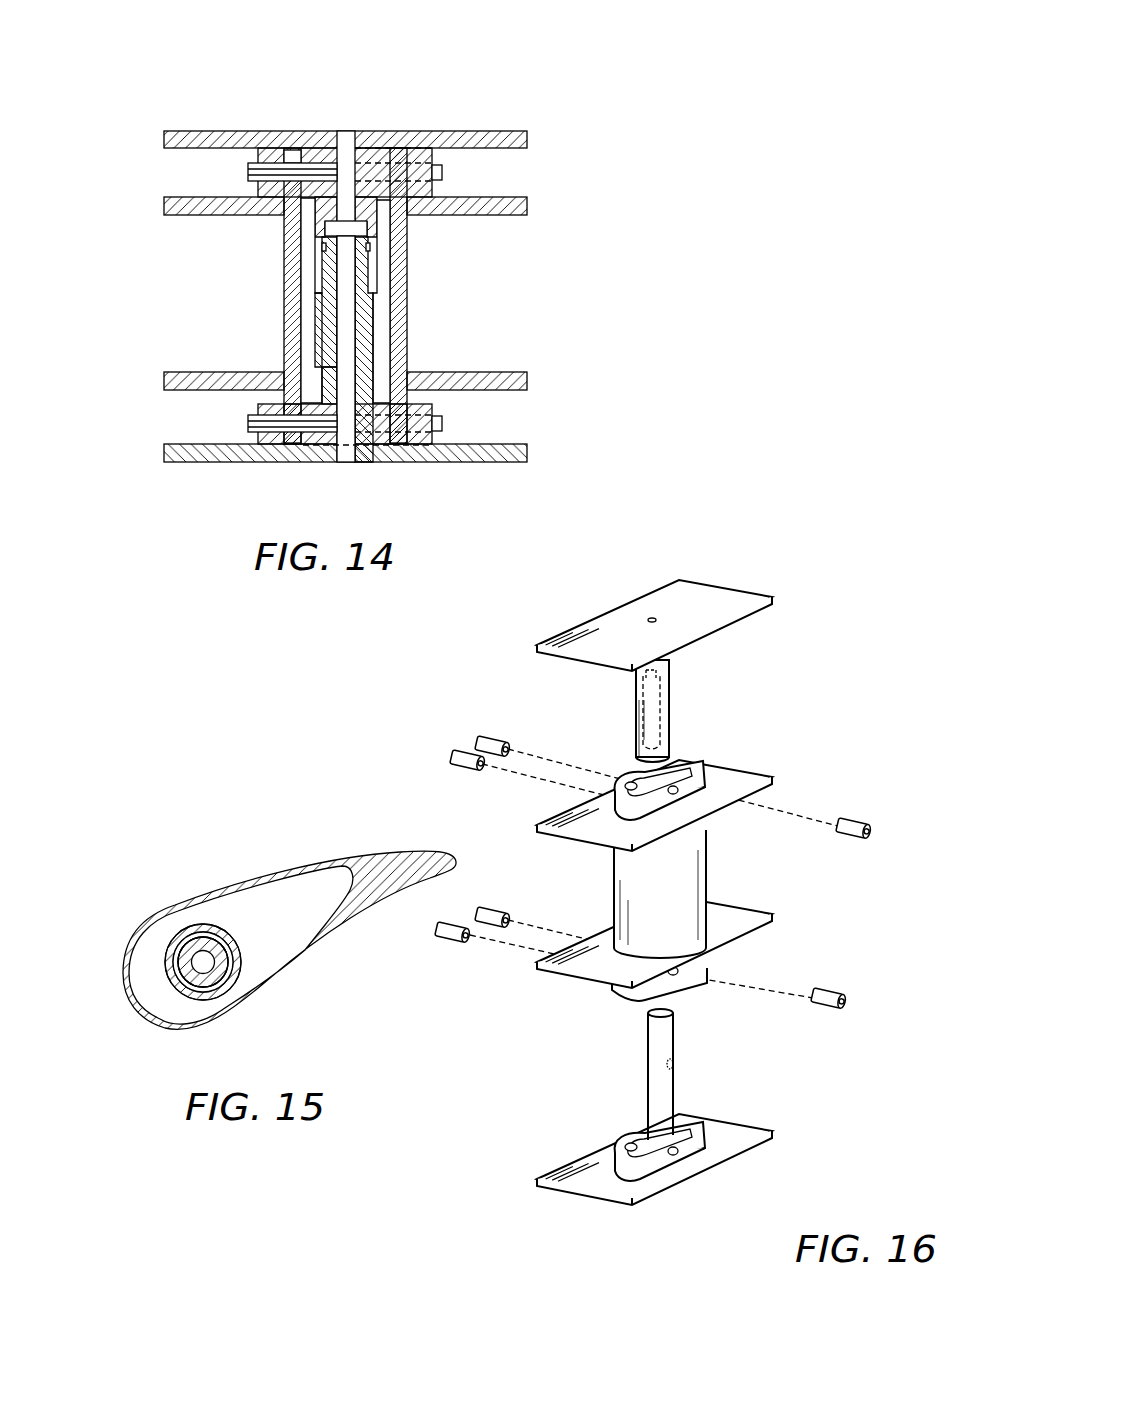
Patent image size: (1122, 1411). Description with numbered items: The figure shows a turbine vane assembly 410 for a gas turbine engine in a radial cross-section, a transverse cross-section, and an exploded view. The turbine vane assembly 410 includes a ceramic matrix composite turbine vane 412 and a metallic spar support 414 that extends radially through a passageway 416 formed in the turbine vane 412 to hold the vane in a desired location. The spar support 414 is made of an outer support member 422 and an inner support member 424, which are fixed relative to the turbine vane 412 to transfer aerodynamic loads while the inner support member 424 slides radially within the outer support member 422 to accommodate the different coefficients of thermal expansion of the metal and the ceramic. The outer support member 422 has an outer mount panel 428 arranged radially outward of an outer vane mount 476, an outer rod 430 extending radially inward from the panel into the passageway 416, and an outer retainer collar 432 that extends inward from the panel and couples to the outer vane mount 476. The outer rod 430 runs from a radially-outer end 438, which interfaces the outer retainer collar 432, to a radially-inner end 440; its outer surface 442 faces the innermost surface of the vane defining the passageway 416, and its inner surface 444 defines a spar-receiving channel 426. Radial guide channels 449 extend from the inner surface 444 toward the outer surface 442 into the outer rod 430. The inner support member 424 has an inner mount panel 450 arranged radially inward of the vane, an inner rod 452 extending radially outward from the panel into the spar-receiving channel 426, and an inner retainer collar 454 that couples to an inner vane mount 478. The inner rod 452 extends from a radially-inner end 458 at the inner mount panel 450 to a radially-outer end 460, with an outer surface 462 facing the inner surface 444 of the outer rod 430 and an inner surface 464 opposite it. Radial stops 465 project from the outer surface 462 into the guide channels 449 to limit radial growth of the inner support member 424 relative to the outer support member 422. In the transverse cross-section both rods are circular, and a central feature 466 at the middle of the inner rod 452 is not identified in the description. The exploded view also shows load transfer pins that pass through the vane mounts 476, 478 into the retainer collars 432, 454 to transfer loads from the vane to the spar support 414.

In FIG. 14, the turbine vane assembly 410 is at (148, 112).
In FIG. 16, the turbine vane assembly 410 is at (800, 538).
In FIG. 14, the turbine vane 412 is at (518, 251).
In FIG. 15, the turbine vane 412 is at (166, 904).
In FIG. 16, the turbine vane 412 is at (720, 871).
In FIG. 14, the spar support 414 is at (96, 152).
In FIG. 16, the spar support 414 is at (858, 656).
In FIG. 15, the passageway 416 is at (304, 904).
In FIG. 14, the outer support member 422 is at (160, 136).
In FIG. 16, the outer support member 422 is at (757, 667).
In FIG. 14, the inner support member 424 is at (170, 426).
In FIG. 16, the inner support member 424 is at (772, 1060).
In FIG. 14, the spar-receiving channel 426 is at (352, 226).
In FIG. 16, the spar-receiving channel 426 is at (662, 678).
In FIG. 14, the outer mount panel 428 is at (232, 131).
In FIG. 16, the outer mount panel 428 is at (696, 600).
In FIG. 14, the outer rod 430 is at (311, 232).
In FIG. 15, the outer rod 430 is at (158, 936).
In FIG. 16, the outer rod 430 is at (680, 706).
In FIG. 14, the outer retainer collar 432 is at (258, 158).
In FIG. 16, the outer retainer collar 432 is at (606, 670).
In FIG. 14, the radially-outer end 438 is at (370, 147).
In FIG. 14, the radially-inner end 440 is at (313, 378).
In FIG. 15, the outer surface 442 is at (238, 980).
In FIG. 15, the inner surface 444 is at (230, 944).
In FIG. 14, the radial guide channels 449 is at (319, 247).
In FIG. 16, the radial guide channels 449 is at (640, 728).
In FIG. 14, the inner mount panel 450 is at (414, 462).
In FIG. 16, the inner mount panel 450 is at (700, 1176).
In FIG. 14, the inner rod 452 is at (370, 349).
In FIG. 15, the inner rod 452 is at (214, 923).
In FIG. 16, the inner rod 452 is at (682, 1104).
In FIG. 14, the inner retainer collar 454 is at (436, 409).
In FIG. 16, the inner retainer collar 454 is at (605, 1150).
In FIG. 14, the radially-inner end 458 is at (322, 446).
In FIG. 14, the radially-outer end 460 is at (335, 220).
In FIG. 15, the outer surface 462 is at (190, 984).
In FIG. 15, the inner surface 464 is at (176, 962).
In FIG. 14, the radial stops 465 is at (371, 276).
In FIG. 16, the radial stops 465 is at (673, 1063).
In FIG. 15, the central hole 466 is at (203, 978).
In FIG. 16, the outer vane mount 476 is at (714, 779).
In FIG. 16, the inner vane mount 478 is at (707, 957).